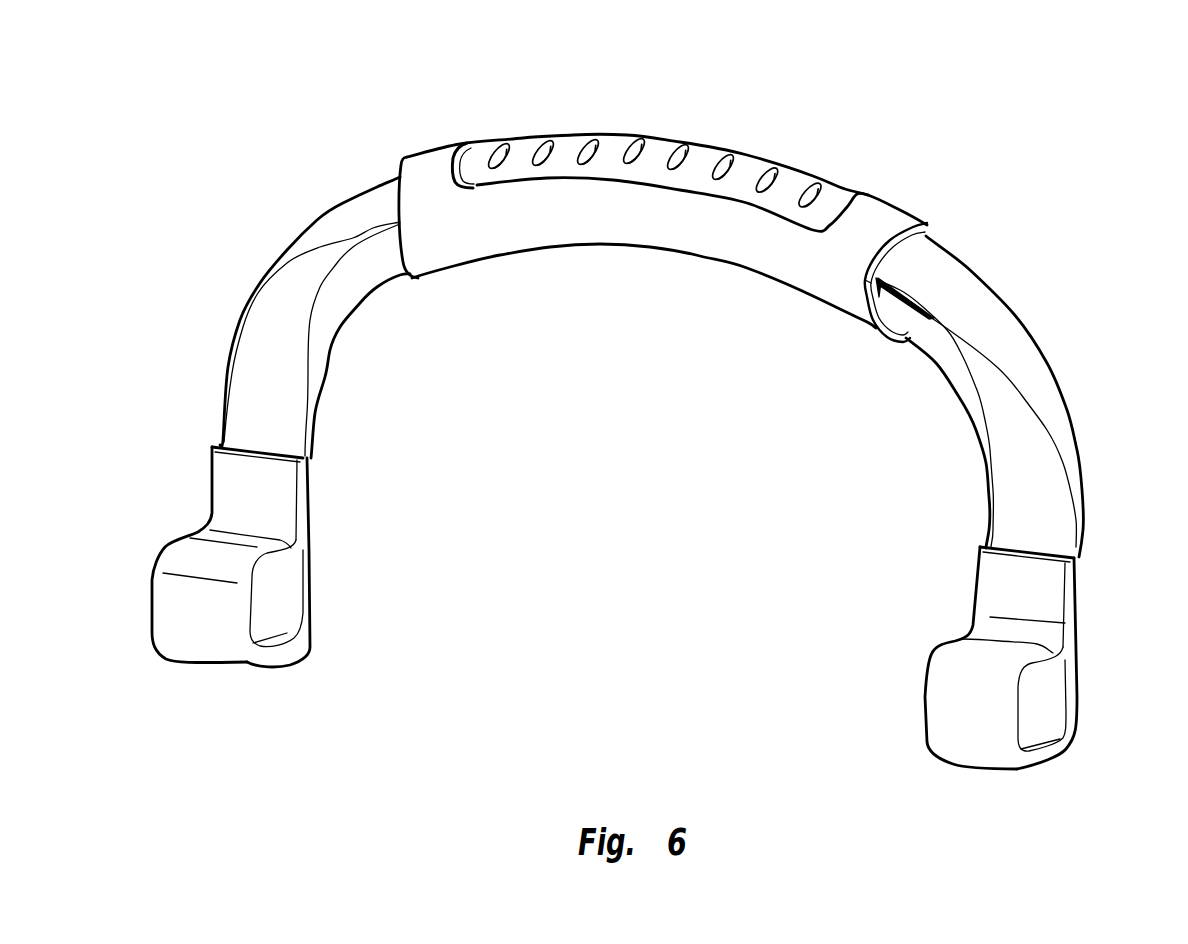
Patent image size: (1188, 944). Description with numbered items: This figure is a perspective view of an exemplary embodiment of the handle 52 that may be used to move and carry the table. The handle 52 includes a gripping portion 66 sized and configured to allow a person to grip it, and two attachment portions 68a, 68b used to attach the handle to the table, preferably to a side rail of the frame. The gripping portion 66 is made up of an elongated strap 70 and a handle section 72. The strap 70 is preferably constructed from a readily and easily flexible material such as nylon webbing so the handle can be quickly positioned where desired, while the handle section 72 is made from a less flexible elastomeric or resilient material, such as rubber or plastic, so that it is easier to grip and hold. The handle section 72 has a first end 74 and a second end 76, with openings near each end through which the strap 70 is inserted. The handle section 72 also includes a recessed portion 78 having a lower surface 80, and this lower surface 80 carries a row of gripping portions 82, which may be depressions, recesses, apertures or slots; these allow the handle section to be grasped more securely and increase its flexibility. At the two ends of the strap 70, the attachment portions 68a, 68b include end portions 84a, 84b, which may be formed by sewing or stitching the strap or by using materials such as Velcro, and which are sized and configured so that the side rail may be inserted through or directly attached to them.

The handle 52 is at (180, 205).
The gripping portion 66 is at (1005, 257).
The attachment portion 68a is at (340, 607).
The attachment portion 68b is at (886, 710).
The elongated strap 70 is at (1053, 515).
The handle section 72 is at (870, 197).
The first end 74 is at (407, 157).
The second end 76 is at (927, 223).
The recessed portion 78 is at (480, 147).
The lower surface 80 is at (528, 140).
The gripping portions 82 is at (641, 138).
The end portion 84a is at (302, 497).
The end portion 84b is at (1067, 600).